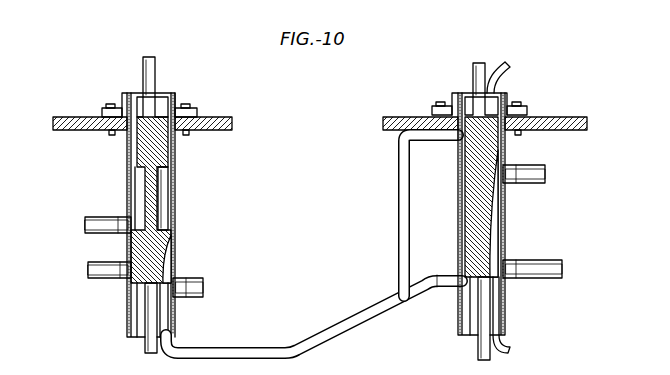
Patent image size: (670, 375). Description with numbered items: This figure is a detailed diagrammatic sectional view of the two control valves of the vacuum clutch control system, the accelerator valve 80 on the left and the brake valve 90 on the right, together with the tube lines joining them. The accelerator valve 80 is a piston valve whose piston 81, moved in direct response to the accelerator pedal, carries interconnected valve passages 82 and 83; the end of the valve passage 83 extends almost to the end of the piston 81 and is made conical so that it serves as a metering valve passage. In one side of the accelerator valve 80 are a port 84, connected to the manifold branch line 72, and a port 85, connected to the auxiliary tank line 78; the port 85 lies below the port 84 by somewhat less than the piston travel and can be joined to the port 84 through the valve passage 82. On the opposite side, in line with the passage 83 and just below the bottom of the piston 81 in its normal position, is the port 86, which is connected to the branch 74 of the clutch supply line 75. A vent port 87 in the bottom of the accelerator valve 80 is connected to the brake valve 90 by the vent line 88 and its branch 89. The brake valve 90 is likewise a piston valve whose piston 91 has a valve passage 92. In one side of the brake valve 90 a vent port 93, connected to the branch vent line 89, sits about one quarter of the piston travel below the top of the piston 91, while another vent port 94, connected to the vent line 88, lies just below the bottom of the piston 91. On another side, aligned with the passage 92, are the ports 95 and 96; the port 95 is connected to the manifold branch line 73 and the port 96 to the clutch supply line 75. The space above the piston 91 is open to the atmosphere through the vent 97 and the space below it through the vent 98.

The branch line 72 is at (95, 215).
The branch line 73 is at (545, 183).
The branch 74 is at (205, 295).
The clutch supply line 75 is at (545, 280).
The line 78 is at (90, 280).
The accelerator valve 80 is at (130, 313).
The piston 81 is at (155, 150).
The valve passage 82 is at (140, 183).
The valve passage 83 is at (160, 195).
The port 84 is at (123, 235).
The port 85 is at (128, 270).
The port 86 is at (183, 278).
The vent port 87 is at (163, 335).
The vent line 88 is at (208, 347).
The branch vent line 89 is at (398, 222).
The brake valve 90 is at (462, 317).
The piston 91 is at (488, 142).
The valve passage 92 is at (498, 210).
The vent port 93 is at (458, 137).
The vent port 94 is at (458, 277).
The port 95 is at (518, 165).
The port 96 is at (517, 258).
The vent 97 is at (507, 73).
The vent 98 is at (507, 345).